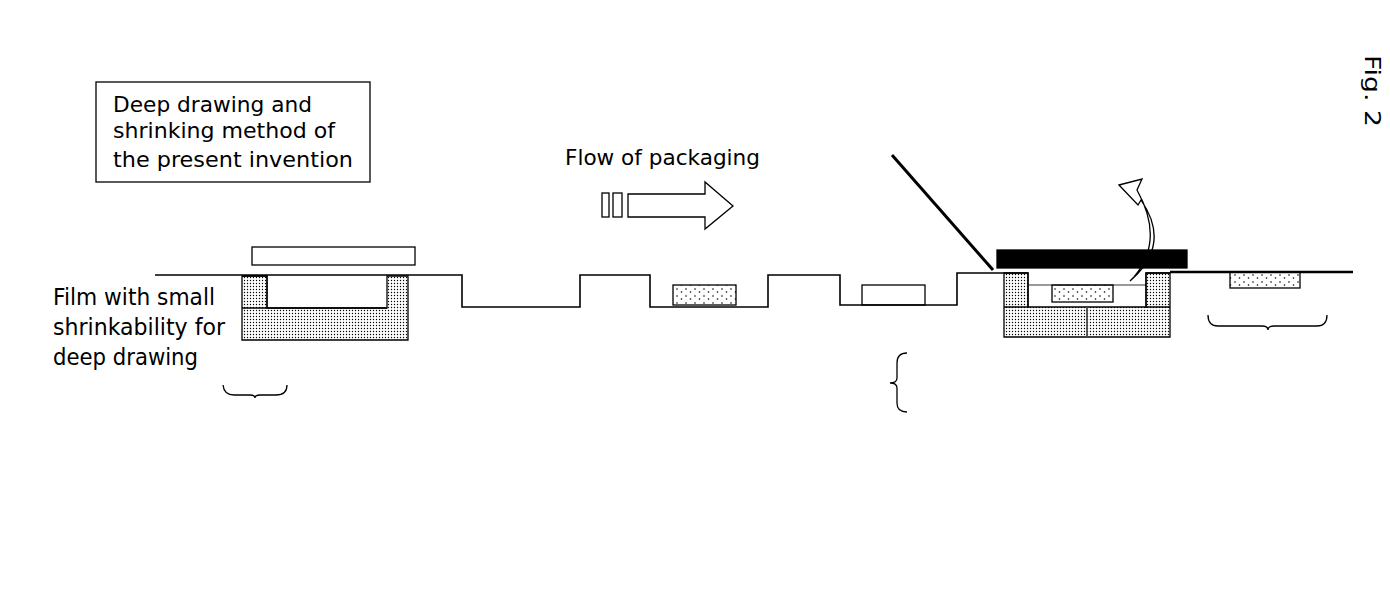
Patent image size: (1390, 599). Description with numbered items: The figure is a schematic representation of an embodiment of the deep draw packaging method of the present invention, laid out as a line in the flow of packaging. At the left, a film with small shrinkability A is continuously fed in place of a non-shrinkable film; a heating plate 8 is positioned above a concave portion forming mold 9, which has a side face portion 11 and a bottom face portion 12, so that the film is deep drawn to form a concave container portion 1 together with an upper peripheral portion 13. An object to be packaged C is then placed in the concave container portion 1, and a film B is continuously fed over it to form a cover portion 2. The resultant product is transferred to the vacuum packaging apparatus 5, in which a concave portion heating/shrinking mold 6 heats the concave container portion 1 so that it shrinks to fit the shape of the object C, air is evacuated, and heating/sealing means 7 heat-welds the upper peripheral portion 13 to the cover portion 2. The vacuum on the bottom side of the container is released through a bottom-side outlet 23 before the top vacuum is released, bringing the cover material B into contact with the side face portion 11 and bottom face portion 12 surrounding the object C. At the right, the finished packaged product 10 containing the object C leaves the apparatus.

The concave container portion 1 is at (255, 408).
The cover portion 2 is at (1058, 268).
The vacuum packaging apparatus 5 is at (888, 382).
The concave portion heating/shrinking mold 6 is at (1004, 333).
The heating/sealing means 7 is at (997, 265).
The heating plate 8 is at (360, 247).
The concave portion forming mold 9 is at (405, 340).
The packaged product 10 is at (1267, 339).
The side face portion 11 is at (259, 298).
The bottom face portion 12 is at (305, 305).
The upper peripheral portion 13 is at (1005, 284).
The bottom-side outlet 23 is at (1087, 322).
The film with small shrinkability A is at (187, 275).
The film for top film B is at (918, 184).
The object to be packaged C is at (706, 285).